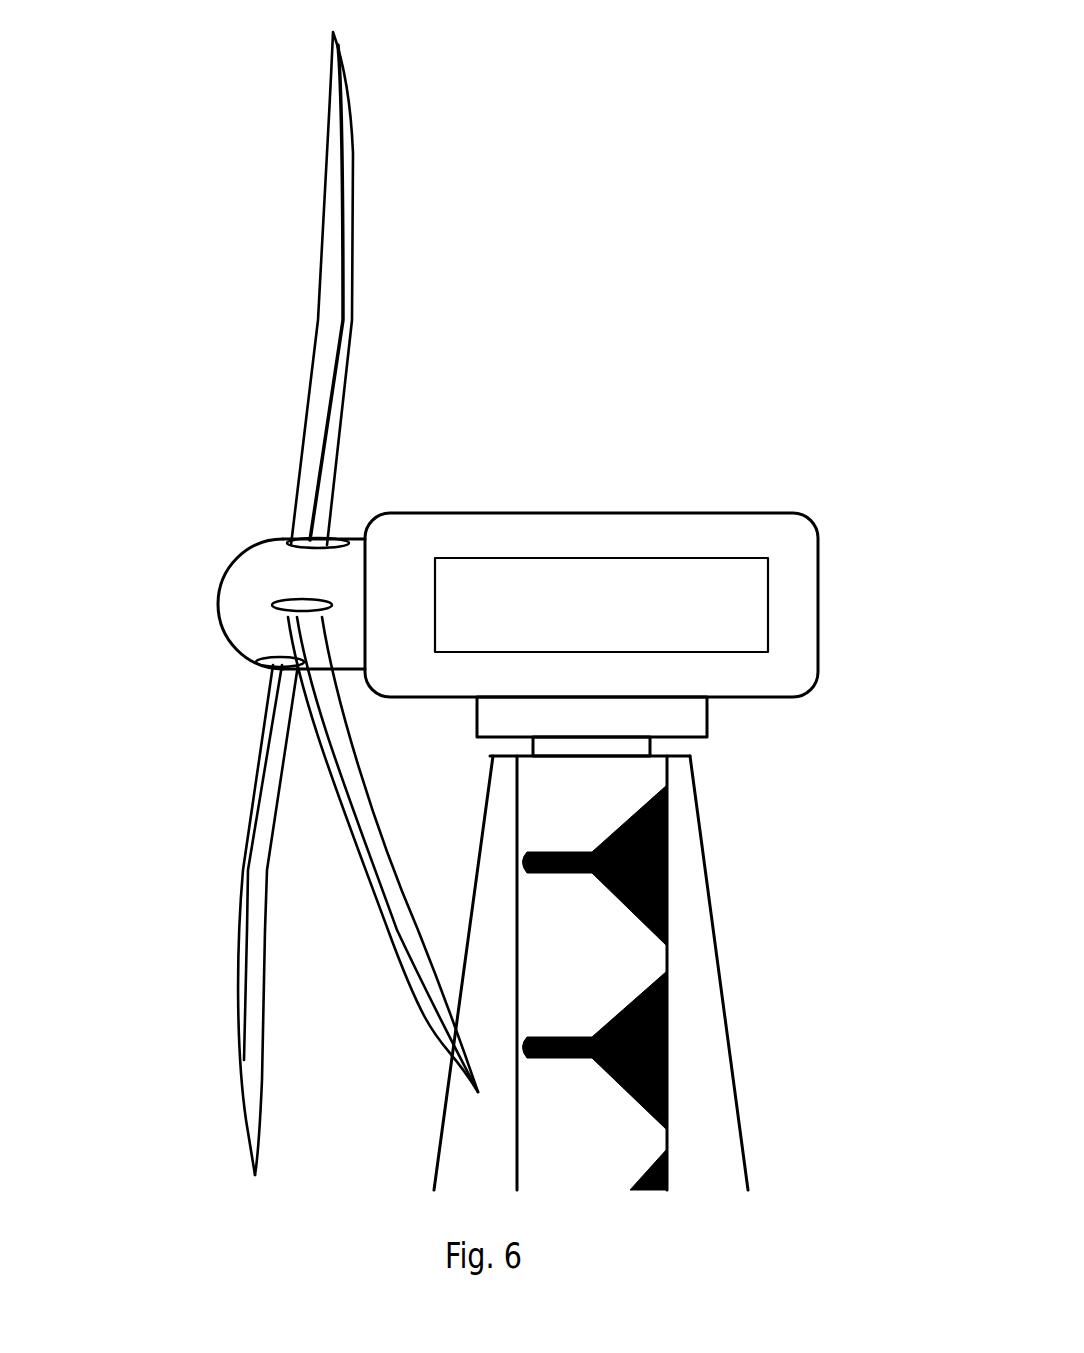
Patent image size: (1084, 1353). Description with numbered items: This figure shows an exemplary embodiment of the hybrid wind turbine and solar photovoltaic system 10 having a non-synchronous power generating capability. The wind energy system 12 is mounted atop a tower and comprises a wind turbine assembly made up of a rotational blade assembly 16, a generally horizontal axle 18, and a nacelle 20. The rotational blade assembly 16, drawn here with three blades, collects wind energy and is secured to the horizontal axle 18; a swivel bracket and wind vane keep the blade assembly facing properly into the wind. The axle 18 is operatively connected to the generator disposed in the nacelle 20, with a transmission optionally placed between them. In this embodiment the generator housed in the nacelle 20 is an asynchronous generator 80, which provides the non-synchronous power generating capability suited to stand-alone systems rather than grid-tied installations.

The hybrid wind turbine and solar photovoltaic system 10 is at (499, 611).
The wind energy system 12 is at (644, 552).
The rotational blade assembly 16 is at (327, 283).
The horizontal axle 18 is at (226, 593).
The nacelle 20 is at (679, 584).
The asynchronous generator 80 is at (601, 605).